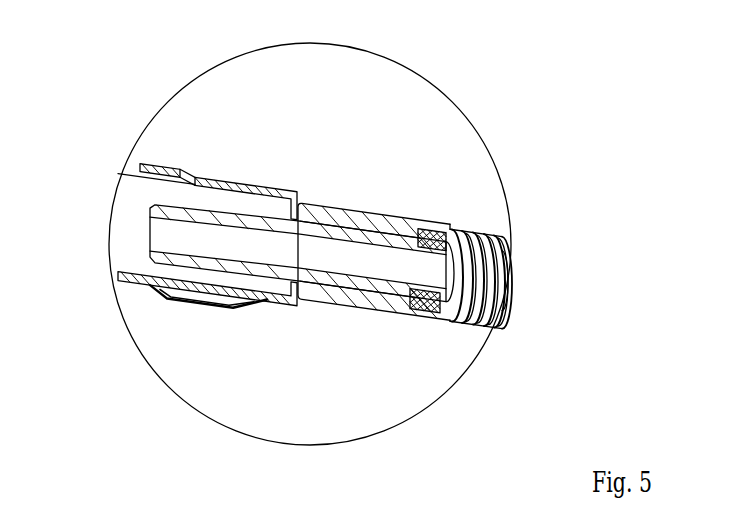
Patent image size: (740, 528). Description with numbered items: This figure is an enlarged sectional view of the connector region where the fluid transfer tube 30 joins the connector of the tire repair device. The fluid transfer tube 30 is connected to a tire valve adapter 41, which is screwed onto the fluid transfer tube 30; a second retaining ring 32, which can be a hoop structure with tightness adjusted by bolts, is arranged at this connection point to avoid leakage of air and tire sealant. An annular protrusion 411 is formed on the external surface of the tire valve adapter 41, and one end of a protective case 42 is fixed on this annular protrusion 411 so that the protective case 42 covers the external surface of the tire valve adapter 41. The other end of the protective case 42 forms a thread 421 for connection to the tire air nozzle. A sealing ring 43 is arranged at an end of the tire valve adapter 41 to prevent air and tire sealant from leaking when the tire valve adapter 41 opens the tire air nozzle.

The fluid transfer tube 30 is at (135, 177).
The second retaining ring 32 is at (172, 298).
The tire valve adapter 41 is at (221, 212).
The annular protrusion 411 is at (327, 227).
The protective case 42 is at (350, 213).
The thread 421 is at (508, 247).
The sealing ring 43 is at (453, 230).